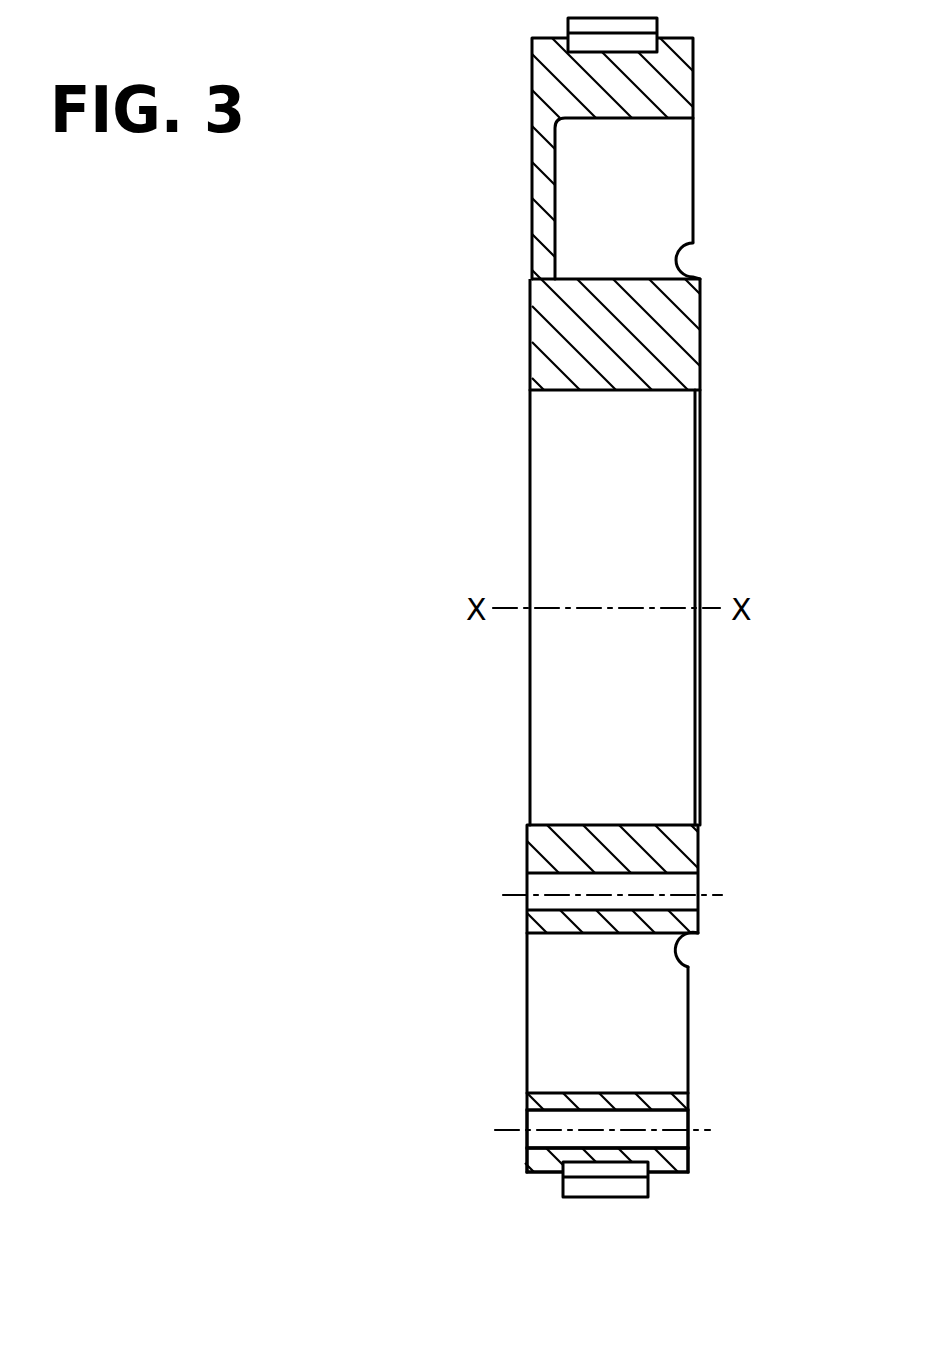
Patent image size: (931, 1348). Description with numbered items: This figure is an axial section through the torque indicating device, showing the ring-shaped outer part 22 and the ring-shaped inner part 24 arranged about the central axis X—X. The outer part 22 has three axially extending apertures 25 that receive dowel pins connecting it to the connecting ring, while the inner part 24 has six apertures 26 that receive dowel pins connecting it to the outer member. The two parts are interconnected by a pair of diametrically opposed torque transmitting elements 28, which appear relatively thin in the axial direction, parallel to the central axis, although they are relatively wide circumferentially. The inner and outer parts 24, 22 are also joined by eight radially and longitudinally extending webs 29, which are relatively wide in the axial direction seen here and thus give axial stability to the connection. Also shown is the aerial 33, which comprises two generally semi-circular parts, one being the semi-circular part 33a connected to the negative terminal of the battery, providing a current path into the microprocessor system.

The outer part 22 is at (519, 1180).
The inner part 24 is at (511, 361).
The axially extending apertures 25 is at (688, 1140).
The apertures 26 is at (697, 886).
The torque transmitting elements 28 is at (531, 190).
The webs 29 is at (694, 212).
The aerial 33 is at (621, 1198).
The semi-circular part 33a is at (575, 1169).